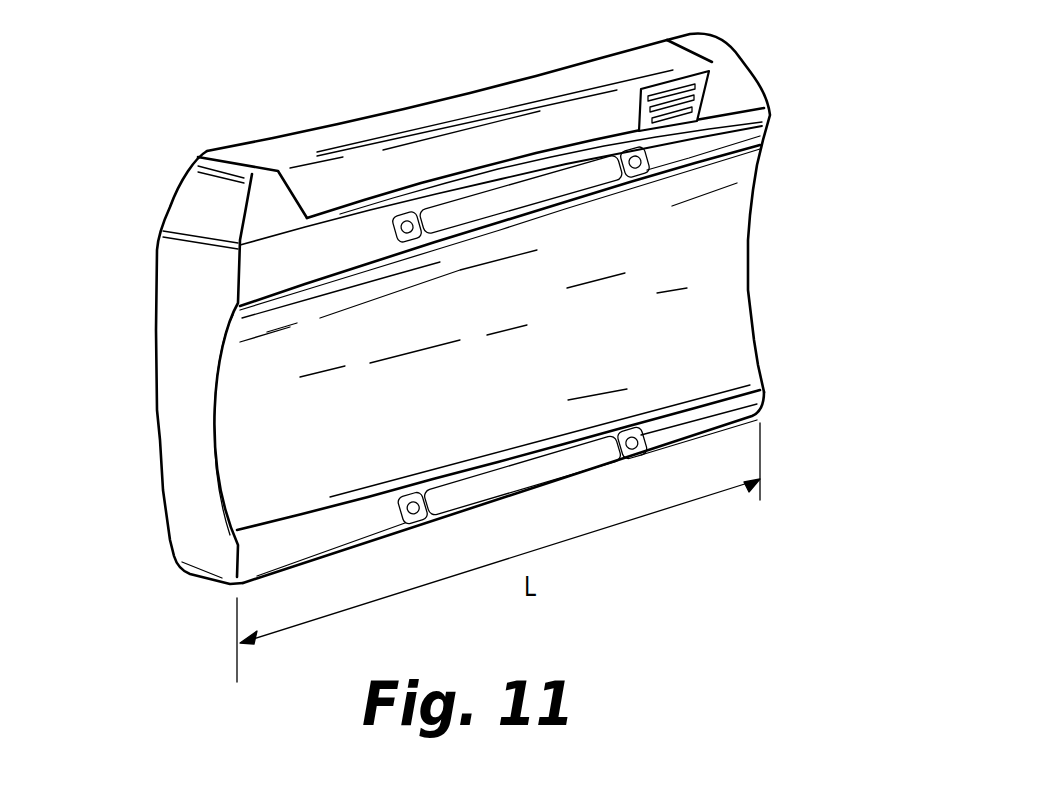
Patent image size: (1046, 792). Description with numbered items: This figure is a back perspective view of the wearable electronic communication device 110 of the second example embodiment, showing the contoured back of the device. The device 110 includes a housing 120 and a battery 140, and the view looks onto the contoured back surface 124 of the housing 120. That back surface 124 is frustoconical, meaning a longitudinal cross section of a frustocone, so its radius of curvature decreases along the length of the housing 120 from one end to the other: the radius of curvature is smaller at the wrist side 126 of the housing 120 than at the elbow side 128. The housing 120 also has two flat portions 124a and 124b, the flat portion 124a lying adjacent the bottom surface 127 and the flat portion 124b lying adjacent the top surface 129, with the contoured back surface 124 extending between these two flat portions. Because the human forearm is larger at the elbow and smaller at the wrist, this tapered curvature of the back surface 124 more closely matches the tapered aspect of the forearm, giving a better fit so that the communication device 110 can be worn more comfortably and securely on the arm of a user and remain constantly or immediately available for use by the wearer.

The wearable electronic communication device 110 is at (475, 334).
The housing 120 is at (469, 337).
The contoured back surface 124 is at (469, 367).
The flat portion 124a is at (320, 532).
The flat portion 124b is at (257, 262).
The wrist side 126 is at (182, 347).
The bottom surface 127 is at (200, 577).
The elbow side 128 is at (755, 190).
The top surface 129 is at (231, 165).
The battery 140 is at (446, 122).